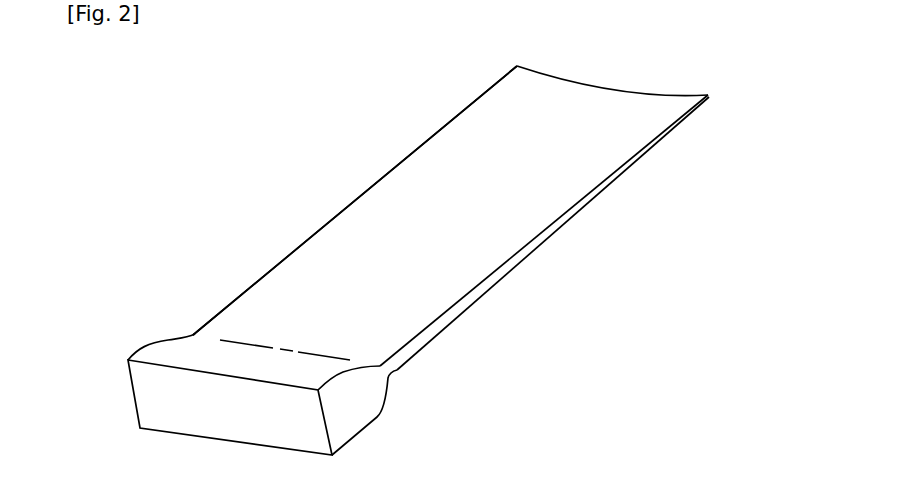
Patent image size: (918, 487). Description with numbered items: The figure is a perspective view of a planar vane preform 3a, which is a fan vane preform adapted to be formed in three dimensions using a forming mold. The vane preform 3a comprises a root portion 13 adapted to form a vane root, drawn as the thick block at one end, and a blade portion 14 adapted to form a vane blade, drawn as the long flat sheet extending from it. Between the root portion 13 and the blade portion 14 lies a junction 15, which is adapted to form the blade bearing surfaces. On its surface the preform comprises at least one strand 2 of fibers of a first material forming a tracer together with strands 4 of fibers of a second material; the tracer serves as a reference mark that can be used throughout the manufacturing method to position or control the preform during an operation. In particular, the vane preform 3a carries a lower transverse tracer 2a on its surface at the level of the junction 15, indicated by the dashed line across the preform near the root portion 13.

The strand 2 is at (451, 218).
The lower transverse tracer 2a is at (267, 345).
The vane preform 3a is at (615, 180).
The strands 4 is at (370, 230).
The root portion 13 is at (148, 357).
The blade portion 14 is at (302, 268).
The junction 15 is at (168, 350).